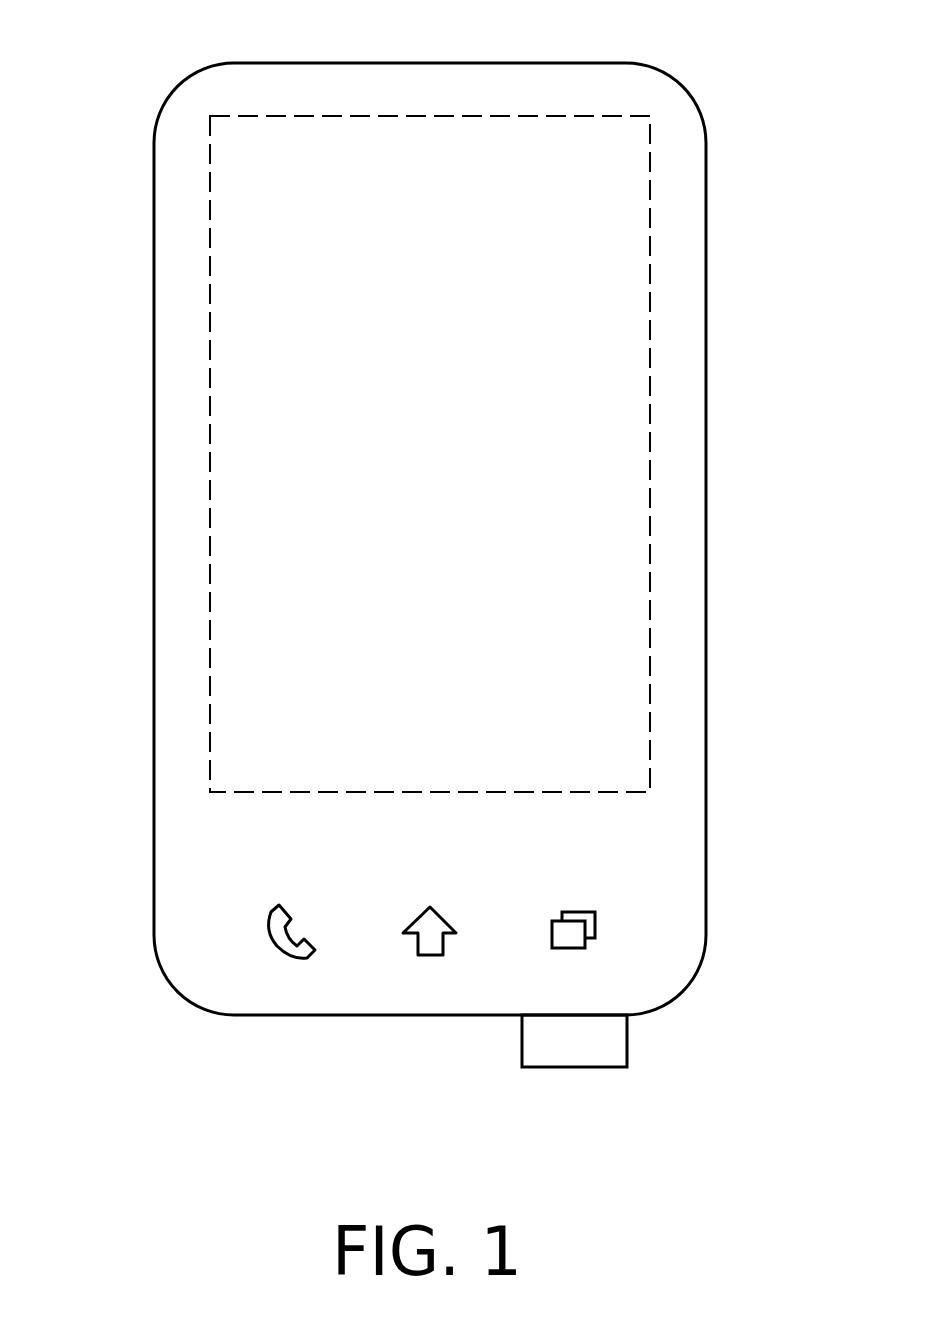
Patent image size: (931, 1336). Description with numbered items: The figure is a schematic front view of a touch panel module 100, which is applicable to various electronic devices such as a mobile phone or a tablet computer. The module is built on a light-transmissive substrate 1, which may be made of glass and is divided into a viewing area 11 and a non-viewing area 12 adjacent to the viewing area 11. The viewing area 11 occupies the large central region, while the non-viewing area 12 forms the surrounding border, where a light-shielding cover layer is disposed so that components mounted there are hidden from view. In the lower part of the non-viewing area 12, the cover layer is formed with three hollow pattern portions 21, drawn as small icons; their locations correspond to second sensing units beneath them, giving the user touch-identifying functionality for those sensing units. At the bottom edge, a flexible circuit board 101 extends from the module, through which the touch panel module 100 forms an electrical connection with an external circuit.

The touch panel module 100 is at (98, 75).
The substrate 1 is at (747, 136).
The non-viewing area 12 is at (675, 254).
The viewing area 11 is at (250, 434).
The hollow pattern portion 21 is at (555, 958).
The flexible circuit board 101 is at (600, 1043).